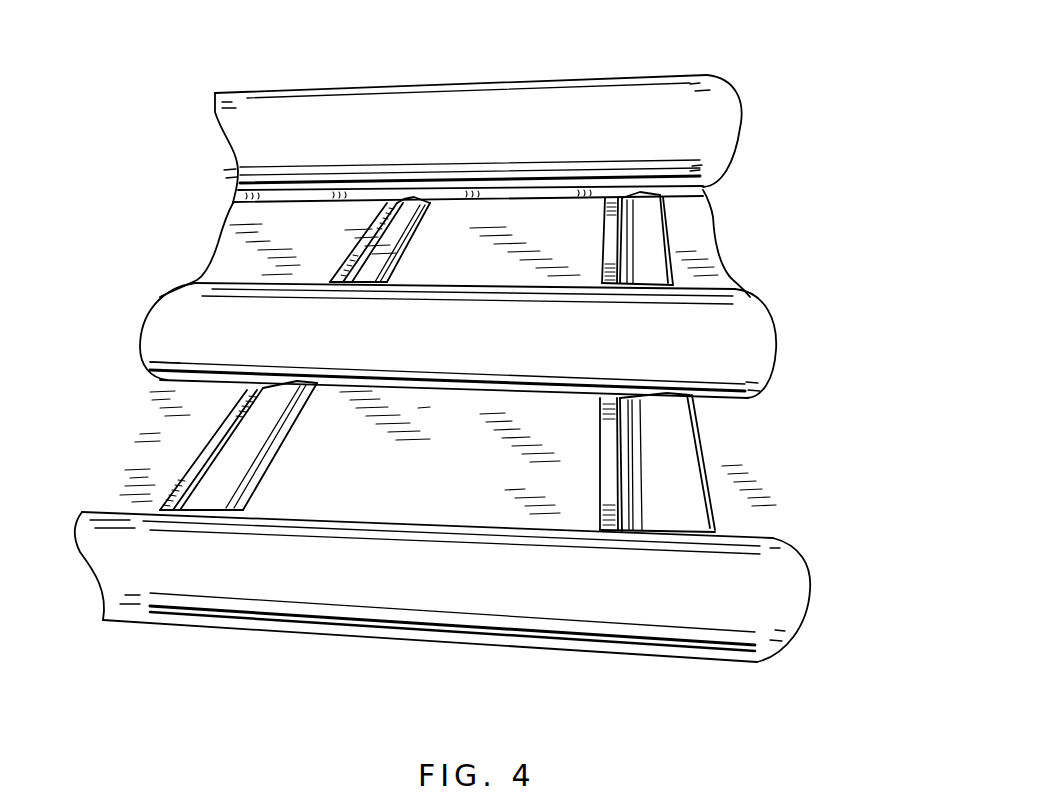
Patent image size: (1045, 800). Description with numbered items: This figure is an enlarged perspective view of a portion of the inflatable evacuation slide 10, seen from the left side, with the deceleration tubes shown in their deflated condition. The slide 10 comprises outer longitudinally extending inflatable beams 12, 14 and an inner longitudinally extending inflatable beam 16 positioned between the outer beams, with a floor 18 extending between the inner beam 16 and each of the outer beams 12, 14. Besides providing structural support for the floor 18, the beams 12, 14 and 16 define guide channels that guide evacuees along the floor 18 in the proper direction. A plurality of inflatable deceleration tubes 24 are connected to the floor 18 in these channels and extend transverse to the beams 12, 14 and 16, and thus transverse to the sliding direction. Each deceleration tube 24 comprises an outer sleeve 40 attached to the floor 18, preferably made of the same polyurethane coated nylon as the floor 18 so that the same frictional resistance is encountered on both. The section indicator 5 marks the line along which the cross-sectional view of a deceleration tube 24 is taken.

The inflatable evacuation slide 10 is at (158, 184).
The outer longitudinally extending inflatable beam 12 is at (673, 608).
The outer longitudinally extending inflatable beam 14 is at (720, 120).
The inner longitudinally extending inflatable beam 16 is at (748, 338).
The floor 18 is at (700, 260).
The inflatable deceleration tube 24 is at (401, 253).
The outer sleeve 40 is at (407, 210).
The section line 5- 5 is at (113, 473).